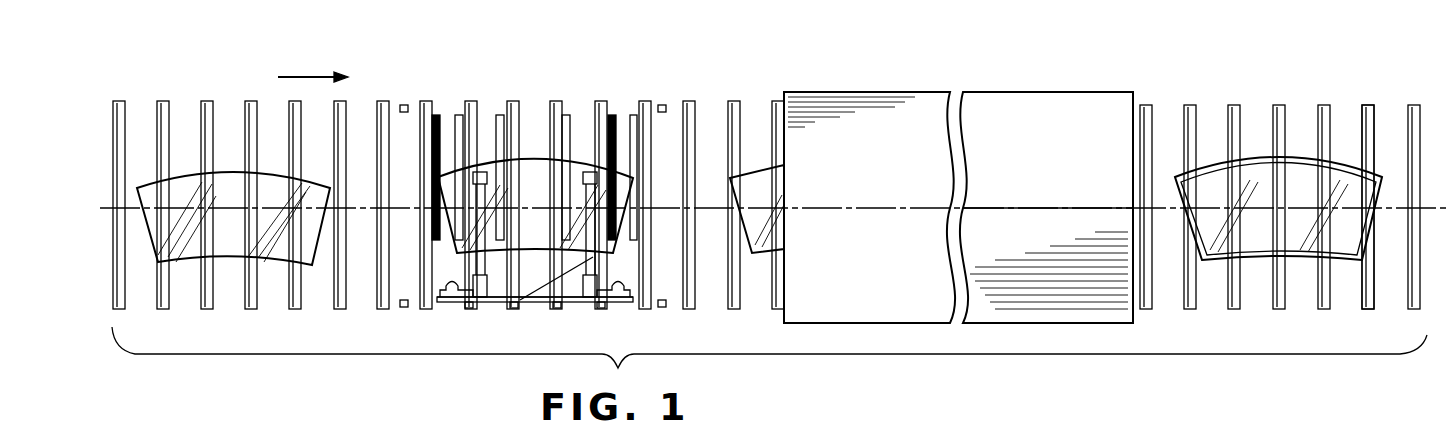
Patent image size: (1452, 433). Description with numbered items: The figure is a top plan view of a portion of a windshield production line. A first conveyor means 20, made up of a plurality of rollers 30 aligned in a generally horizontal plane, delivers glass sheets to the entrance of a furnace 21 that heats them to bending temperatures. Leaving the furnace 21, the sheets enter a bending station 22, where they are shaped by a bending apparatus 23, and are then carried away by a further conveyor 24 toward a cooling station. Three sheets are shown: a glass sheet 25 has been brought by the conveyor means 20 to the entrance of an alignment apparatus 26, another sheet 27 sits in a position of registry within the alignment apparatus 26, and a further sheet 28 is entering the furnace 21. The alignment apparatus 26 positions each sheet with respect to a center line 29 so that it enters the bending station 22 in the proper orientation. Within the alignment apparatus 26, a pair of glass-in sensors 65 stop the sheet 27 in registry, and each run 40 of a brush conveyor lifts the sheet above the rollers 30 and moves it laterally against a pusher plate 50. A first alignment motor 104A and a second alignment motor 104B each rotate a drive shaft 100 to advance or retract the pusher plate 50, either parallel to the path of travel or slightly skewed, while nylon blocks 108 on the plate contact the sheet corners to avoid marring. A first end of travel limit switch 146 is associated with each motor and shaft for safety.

The first conveyor means 20 is at (233, 322).
The furnace 21 is at (884, 92).
The bending station 22 is at (1278, 217).
The bending apparatus 23 is at (1293, 274).
The further conveyor 24 is at (1369, 106).
The glass sheet 25 is at (232, 185).
The alignment apparatus 26 is at (745, 232).
The glass sheet 27 is at (533, 160).
The glass sheet 28 is at (761, 166).
The center line 29 is at (1015, 208).
The rollers 30 is at (167, 101).
The run 40 is at (438, 117).
The pusher plate 50 is at (540, 305).
The glass-in sensors 65 is at (404, 105).
The drive shaft 100 is at (505, 303).
The first alignment motor 104A is at (481, 255).
The second alignment motor 104B is at (590, 180).
The blocks 108 is at (445, 300).
The first end of travel limit switch 146 is at (633, 115).